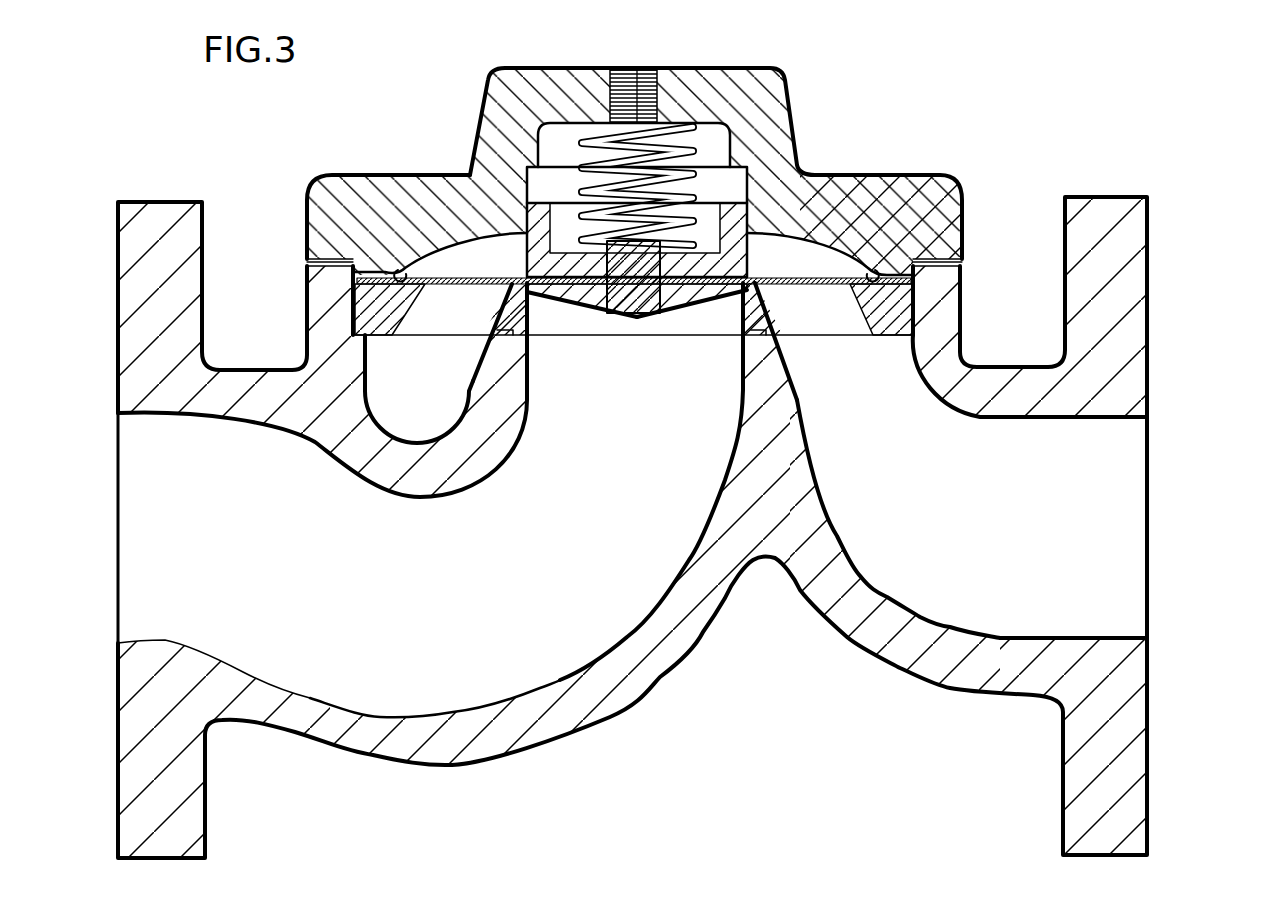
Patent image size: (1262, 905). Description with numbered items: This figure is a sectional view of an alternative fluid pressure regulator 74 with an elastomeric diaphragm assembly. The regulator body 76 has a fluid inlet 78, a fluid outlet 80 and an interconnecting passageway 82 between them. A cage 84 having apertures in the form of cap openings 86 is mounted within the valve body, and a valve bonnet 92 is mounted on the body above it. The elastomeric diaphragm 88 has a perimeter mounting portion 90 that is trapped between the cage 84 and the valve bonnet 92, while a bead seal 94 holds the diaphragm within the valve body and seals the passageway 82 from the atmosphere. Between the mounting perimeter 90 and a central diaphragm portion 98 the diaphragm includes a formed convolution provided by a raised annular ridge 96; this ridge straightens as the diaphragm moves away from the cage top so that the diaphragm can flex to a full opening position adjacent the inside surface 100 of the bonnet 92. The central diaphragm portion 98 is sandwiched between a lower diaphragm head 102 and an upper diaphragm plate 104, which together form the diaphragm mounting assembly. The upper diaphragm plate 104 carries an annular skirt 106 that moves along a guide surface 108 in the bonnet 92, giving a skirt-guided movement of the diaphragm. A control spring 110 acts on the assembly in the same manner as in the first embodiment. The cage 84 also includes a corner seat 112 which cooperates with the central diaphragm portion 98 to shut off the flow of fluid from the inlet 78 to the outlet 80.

The fluid pressure regulator 74 is at (271, 139).
The regulator body 76 is at (308, 327).
The fluid inlet 78 is at (145, 462).
The fluid outlet 80 is at (1115, 472).
The interconnecting passageway 82 is at (440, 383).
The cage 84 is at (530, 305).
The cap openings 86 is at (433, 317).
The elastomeric diaphragm 88 is at (790, 277).
The perimeter mounting portion 90 is at (307, 245).
The valve bonnet 92 is at (345, 220).
The bead seal 94 is at (352, 282).
The raised annular ridge 96 is at (397, 220).
The central diaphragm portion 98 is at (588, 302).
The inside surface 100 is at (803, 240).
The lower diaphragm head 102 is at (643, 303).
The upper diaphragm plate 104 is at (536, 160).
The annular skirt 106 is at (527, 178).
The guide surface 108 is at (760, 165).
The control spring 110 is at (537, 125).
The corner seat 112 is at (727, 297).